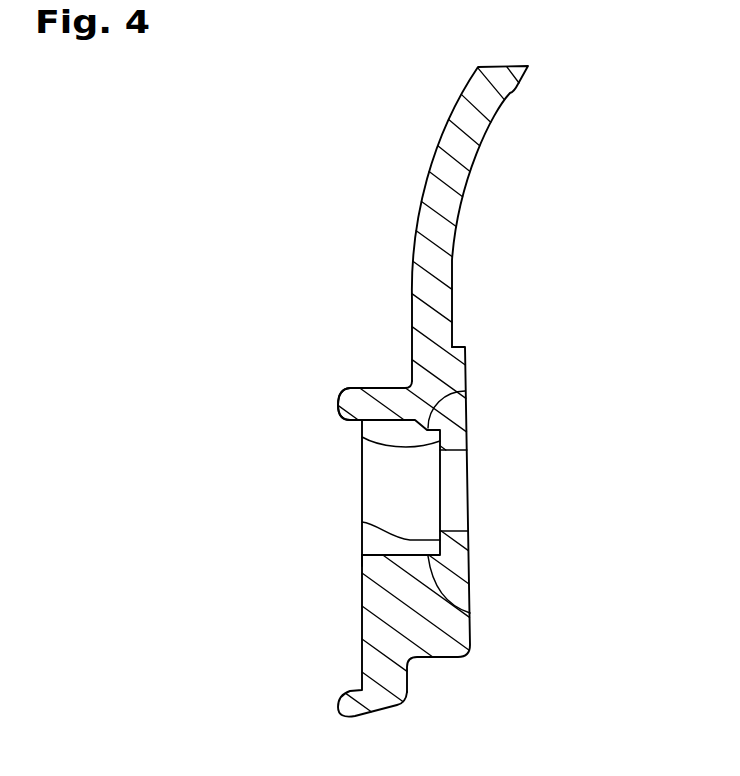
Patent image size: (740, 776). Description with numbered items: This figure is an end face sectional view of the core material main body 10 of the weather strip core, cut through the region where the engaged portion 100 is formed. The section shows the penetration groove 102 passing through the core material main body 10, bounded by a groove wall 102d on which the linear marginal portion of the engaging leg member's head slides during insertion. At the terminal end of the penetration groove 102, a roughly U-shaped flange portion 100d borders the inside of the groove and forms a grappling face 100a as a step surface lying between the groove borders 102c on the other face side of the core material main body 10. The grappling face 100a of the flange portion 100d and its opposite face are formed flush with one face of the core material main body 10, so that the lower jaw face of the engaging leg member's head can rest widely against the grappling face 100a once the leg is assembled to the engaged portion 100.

The core material main body 10 is at (413, 184).
The engaged portion 100 is at (462, 494).
The grappling face 100a is at (362, 437).
The flange portion 100d is at (455, 542).
The penetration groove 102 is at (365, 483).
The groove borders 102c is at (337, 405).
The groove wall 102d is at (465, 392).